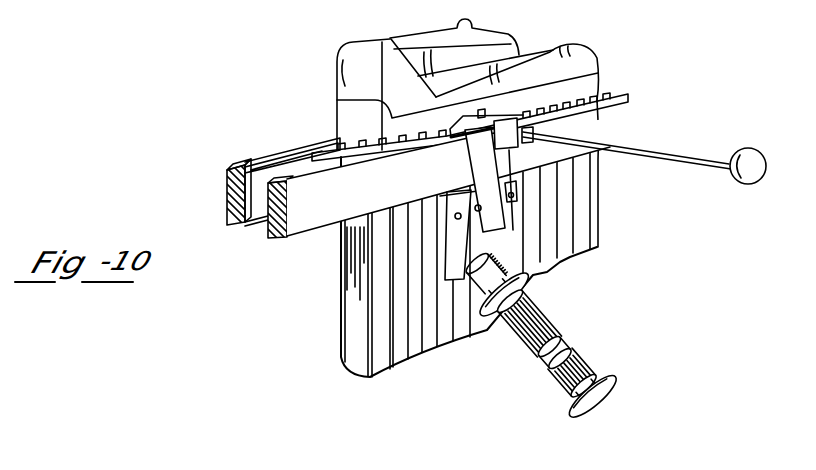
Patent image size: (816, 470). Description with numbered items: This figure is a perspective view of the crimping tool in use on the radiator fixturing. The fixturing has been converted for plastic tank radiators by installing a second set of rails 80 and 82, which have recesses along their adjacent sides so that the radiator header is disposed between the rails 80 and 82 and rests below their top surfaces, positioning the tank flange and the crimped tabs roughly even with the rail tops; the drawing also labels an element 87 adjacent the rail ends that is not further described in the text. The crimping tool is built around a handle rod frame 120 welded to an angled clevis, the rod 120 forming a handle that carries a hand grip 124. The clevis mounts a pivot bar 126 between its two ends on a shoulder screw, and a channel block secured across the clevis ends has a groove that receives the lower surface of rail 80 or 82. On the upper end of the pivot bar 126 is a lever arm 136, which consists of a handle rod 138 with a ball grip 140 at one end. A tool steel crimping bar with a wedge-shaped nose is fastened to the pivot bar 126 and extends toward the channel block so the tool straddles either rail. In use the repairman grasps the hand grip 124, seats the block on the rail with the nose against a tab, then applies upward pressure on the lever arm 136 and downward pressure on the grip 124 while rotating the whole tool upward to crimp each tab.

The rail 80 is at (445, 224).
The rail 82 is at (249, 182).
The end pad 87 is at (253, 225).
The handle rod frame 120 is at (533, 280).
The hand grip 124 is at (572, 350).
The pivot bar 126 is at (449, 177).
The lever arm 136 is at (515, 82).
The handle rod 138 is at (626, 131).
The ball grip 140 is at (729, 143).